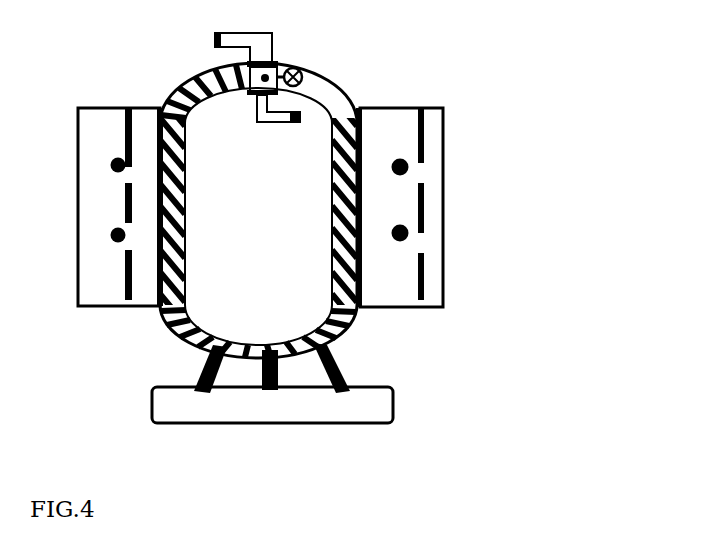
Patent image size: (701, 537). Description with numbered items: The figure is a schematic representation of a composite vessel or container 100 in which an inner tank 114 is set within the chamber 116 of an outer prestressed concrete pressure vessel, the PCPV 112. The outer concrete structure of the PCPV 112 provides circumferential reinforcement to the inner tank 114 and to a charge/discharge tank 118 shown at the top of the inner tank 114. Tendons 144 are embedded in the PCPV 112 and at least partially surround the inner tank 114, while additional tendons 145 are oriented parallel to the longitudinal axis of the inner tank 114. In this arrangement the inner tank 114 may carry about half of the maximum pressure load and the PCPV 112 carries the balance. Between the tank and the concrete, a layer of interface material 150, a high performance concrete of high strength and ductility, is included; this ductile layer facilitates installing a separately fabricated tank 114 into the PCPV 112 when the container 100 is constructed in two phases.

The composite vessel/container 100 is at (527, 160).
The PCPV portion 112 is at (97, 270).
The inner tank 114 is at (207, 90).
The chamber 116 is at (172, 110).
The charge/discharge tank 118 is at (252, 50).
The tendons 144 is at (387, 140).
The tendons 145 is at (417, 108).
The interface material 150 is at (367, 257).